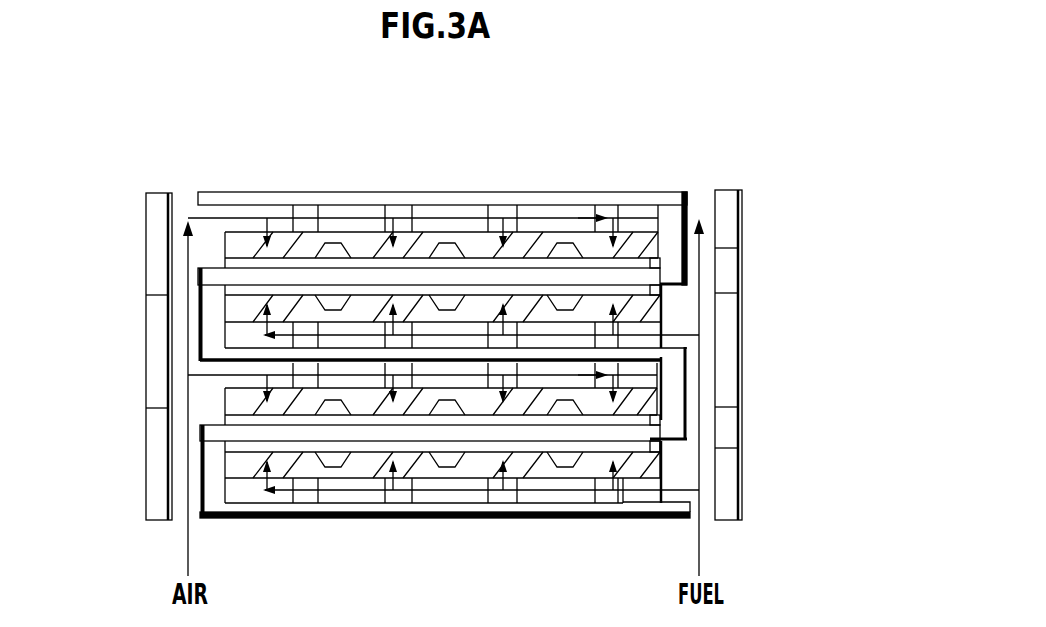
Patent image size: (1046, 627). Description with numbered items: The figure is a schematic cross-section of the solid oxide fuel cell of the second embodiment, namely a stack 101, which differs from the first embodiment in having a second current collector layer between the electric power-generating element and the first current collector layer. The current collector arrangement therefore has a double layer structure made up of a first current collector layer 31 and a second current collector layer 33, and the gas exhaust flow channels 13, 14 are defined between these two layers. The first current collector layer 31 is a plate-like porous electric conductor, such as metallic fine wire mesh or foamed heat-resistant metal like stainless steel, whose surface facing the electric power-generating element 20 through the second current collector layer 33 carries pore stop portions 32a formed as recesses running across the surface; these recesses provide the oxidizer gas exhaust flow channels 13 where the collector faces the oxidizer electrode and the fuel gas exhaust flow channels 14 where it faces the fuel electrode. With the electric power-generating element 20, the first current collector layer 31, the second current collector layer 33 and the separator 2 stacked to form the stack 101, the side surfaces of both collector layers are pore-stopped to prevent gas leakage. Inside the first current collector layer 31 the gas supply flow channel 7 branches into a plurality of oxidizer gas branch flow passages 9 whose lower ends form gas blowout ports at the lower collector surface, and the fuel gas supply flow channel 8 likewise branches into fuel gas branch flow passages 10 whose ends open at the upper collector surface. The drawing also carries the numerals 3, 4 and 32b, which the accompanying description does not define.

The stack 101 is at (106, 382).
The separator 2 is at (622, 204).
The air-side end plate 3 is at (160, 534).
The fuel-side end plate 4 is at (716, 538).
The gas supply flow channel 7 is at (428, 215).
The fuel gas supply flow channel 8 is at (560, 330).
The oxidizer gas branch flow passages 9 is at (389, 213).
The fuel gas branch flow passages 10 is at (513, 323).
The oxidizer gas exhaust flow channels 13 is at (478, 250).
The fuel gas exhaust flow channels 14 is at (455, 300).
The electric power-generating element 20 is at (203, 278).
The first current collector layer 31 is at (372, 225).
The pore stop portions 32a is at (452, 242).
The fuel flow passage 32b is at (660, 250).
The second current collector layer 33 is at (650, 262).